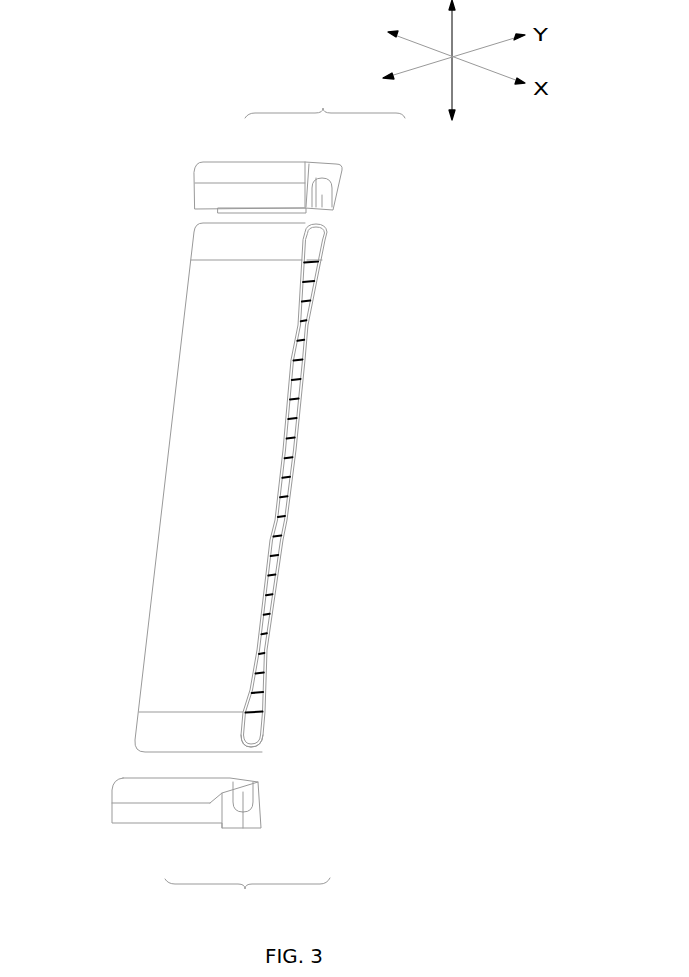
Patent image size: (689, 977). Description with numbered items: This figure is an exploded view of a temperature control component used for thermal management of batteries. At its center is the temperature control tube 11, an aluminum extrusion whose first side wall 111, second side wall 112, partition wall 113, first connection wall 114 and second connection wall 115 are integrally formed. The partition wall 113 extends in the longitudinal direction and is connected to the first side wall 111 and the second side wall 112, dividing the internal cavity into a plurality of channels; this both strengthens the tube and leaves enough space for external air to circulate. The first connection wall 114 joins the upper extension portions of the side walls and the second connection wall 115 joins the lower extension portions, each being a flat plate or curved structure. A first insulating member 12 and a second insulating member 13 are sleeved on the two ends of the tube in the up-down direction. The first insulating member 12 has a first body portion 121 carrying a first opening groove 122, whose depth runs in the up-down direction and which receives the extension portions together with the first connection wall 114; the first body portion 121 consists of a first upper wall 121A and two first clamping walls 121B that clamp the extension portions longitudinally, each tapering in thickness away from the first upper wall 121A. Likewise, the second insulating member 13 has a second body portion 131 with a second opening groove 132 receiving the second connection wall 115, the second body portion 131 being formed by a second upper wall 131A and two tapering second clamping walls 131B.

The temperature control tube 11 is at (233, 488).
The first side wall 111 is at (192, 495).
The second side wall 112 is at (301, 394).
The partition wall 113 is at (312, 280).
The first connection wall 114 is at (317, 232).
The second connection wall 115 is at (262, 753).
The first insulating member 12 is at (181, 178).
The first body portion 121 is at (325, 103).
The first upper wall 121A is at (330, 172).
The first clamping walls 121B is at (305, 191).
The first opening groove 122 is at (323, 198).
The second insulating member 13 is at (103, 814).
The second body portion 131 is at (247, 894).
The second upper wall 131A is at (243, 818).
The second clamping walls 131B is at (218, 803).
The second opening groove 132 is at (245, 792).